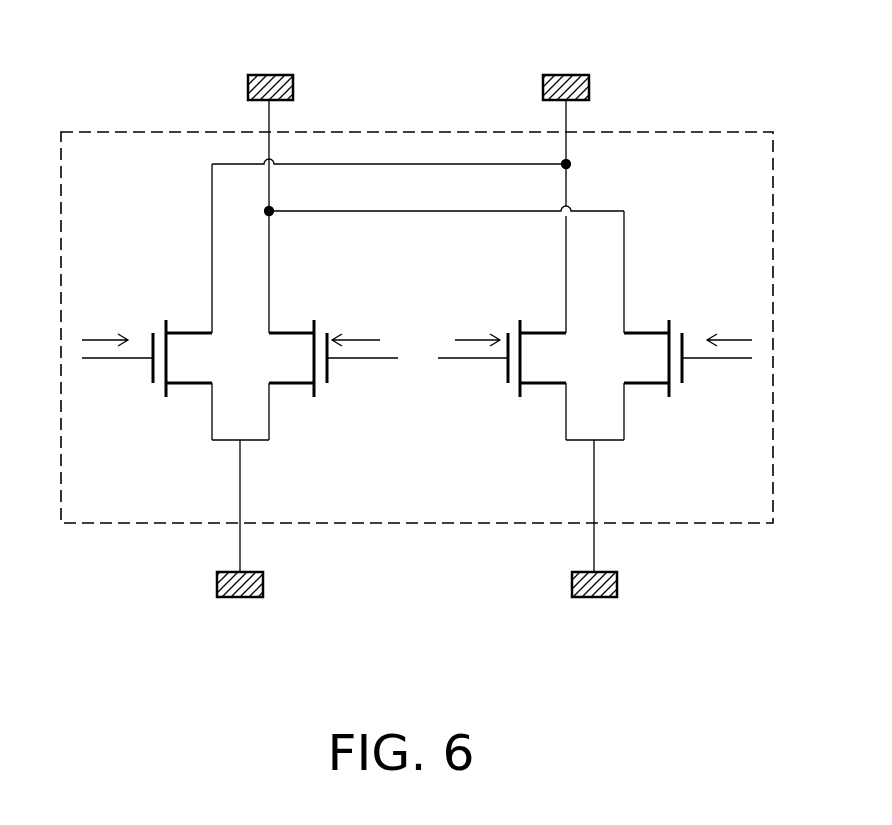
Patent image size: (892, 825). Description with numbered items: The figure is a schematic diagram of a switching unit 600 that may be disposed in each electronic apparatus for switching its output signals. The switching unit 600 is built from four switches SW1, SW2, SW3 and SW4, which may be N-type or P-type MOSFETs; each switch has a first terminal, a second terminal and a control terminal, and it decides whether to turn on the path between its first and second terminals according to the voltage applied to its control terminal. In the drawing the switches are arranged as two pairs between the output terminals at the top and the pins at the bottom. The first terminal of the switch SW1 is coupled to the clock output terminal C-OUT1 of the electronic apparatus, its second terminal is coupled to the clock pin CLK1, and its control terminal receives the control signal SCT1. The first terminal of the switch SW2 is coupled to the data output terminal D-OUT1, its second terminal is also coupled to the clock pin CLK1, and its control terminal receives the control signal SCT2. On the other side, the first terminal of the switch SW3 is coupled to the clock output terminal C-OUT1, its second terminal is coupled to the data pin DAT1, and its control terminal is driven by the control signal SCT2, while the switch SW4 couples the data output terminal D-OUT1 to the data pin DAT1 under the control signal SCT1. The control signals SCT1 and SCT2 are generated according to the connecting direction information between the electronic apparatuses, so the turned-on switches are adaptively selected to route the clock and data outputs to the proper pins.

The switching unit 600 is at (737, 132).
The switch SW1 is at (293, 358).
The switch SW2 is at (188, 358).
The switch SW3 is at (646, 358).
The switch SW4 is at (545, 358).
The clock output terminal C-OUT1 is at (270, 75).
The data output terminal D-OUT1 is at (566, 75).
The clock pin CLK1 is at (240, 597).
The data pin DAT1 is at (594, 597).
The control signal SCT1 is at (417, 326).
The control signal SCT2 is at (416, 326).